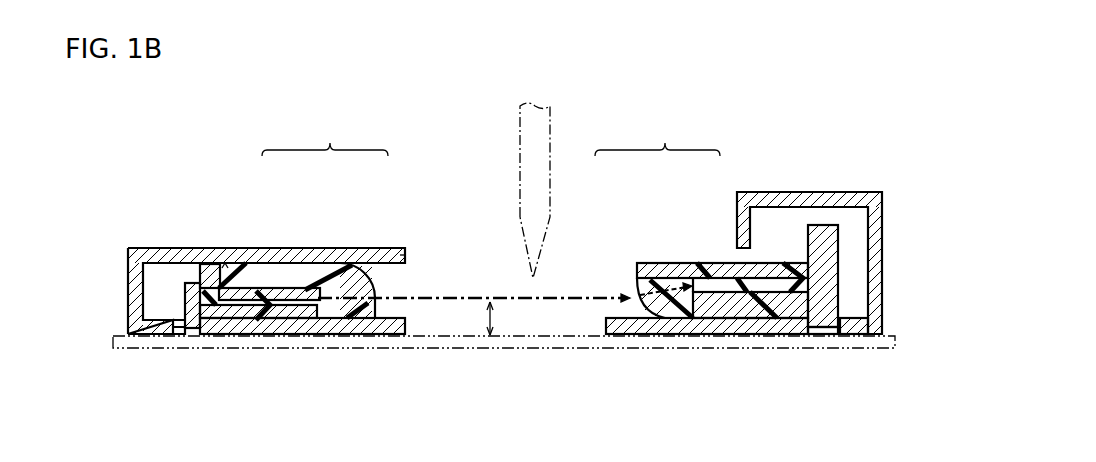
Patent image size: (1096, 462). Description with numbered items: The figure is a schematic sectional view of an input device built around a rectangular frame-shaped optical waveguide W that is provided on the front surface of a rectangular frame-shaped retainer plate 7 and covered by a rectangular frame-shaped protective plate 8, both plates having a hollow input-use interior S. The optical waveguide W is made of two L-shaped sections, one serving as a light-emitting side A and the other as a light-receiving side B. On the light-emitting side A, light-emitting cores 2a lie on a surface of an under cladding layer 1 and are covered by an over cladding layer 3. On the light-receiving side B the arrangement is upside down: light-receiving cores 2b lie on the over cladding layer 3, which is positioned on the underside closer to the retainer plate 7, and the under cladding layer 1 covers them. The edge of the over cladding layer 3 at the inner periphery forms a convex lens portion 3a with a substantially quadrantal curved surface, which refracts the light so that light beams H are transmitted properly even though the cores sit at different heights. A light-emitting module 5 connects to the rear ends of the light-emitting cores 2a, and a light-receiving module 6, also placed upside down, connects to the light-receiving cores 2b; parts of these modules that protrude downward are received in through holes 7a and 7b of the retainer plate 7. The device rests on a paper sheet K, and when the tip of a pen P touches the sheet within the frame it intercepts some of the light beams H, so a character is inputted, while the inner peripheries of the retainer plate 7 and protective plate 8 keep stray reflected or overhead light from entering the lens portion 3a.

The under cladding layer 1 is at (252, 305).
The light-emitting cores 2a is at (280, 298).
The light-receiving cores 2b is at (722, 280).
The over cladding layer 3 is at (312, 273).
The lens portion 3a is at (375, 285).
The light-emitting module 5 is at (188, 283).
The light-receiving module 6 is at (823, 228).
The retainer plate 7 is at (262, 334).
The through hole 7a is at (190, 335).
The through hole 7b is at (838, 334).
The protective plate 8 is at (163, 253).
The light-emitting side A is at (325, 130).
The light-receiving side B is at (657, 131).
The pen P is at (528, 158).
The light beams H is at (512, 296).
The paper sheet K is at (518, 350).
The hollow input-use interior S is at (407, 255).
The optical waveguide W is at (225, 263).